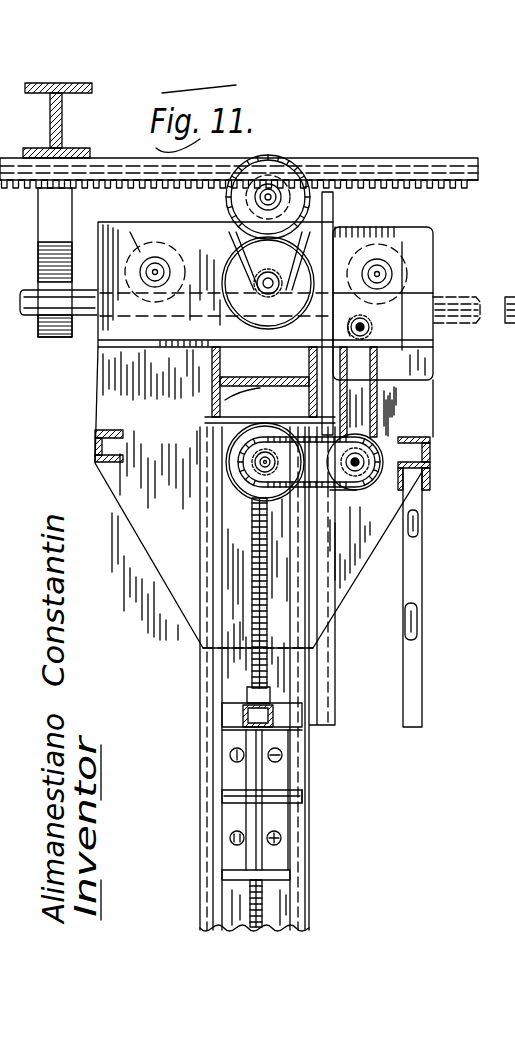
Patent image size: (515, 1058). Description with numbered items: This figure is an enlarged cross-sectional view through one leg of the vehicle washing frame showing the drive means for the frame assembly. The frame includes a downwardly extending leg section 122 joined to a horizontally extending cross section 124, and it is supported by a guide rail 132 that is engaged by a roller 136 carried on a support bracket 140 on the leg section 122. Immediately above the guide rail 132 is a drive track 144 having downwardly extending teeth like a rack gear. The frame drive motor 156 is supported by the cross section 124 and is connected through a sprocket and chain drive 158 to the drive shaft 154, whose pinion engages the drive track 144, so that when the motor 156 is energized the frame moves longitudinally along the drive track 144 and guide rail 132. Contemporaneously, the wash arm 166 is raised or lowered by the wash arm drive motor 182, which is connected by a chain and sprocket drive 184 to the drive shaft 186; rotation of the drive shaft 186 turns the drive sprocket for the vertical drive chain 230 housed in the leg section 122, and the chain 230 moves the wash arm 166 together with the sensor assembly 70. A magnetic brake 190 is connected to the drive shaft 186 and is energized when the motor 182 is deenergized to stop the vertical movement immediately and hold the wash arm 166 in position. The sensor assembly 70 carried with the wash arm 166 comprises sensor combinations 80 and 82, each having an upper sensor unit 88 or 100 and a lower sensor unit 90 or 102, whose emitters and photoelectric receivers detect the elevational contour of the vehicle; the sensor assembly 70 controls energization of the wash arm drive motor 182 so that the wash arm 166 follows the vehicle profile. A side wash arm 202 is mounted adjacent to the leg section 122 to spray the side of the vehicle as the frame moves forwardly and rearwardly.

The sensor assembly 70 is at (329, 740).
The sensor combination 80 is at (218, 798).
The sensor combination 82 is at (285, 798).
The upper sensor unit 88 is at (232, 753).
The lower sensor unit 90 is at (233, 852).
The upper sensor unit 100 is at (335, 771).
The lower sensor unit 102 is at (342, 851).
The leg section 122 is at (337, 908).
The cross section 124 is at (210, 402).
The guide rail 132 is at (458, 303).
The roller 136 is at (92, 217).
The support bracket 140 is at (452, 562).
The drive track 144 is at (427, 173).
The drive shaft 154 is at (270, 195).
The frame drive motor 156 is at (333, 235).
The sprocket and chain drive 158 is at (240, 200).
The wash arm 166 is at (278, 705).
The wash arm drive motor 182 is at (247, 487).
The chain and sprocket drive 184 is at (462, 507).
The drive shaft 186 is at (372, 447).
The magnetic brake 190 is at (438, 375).
The side wash arm 202 is at (424, 641).
The vertical drive chain 230 is at (265, 628).